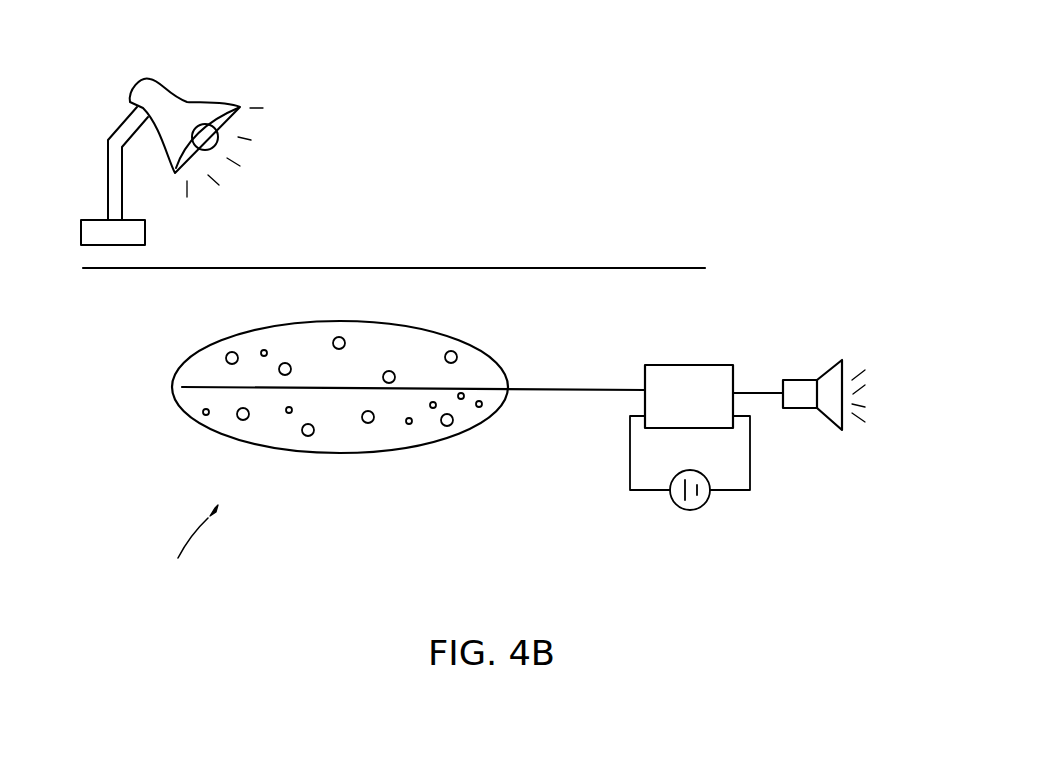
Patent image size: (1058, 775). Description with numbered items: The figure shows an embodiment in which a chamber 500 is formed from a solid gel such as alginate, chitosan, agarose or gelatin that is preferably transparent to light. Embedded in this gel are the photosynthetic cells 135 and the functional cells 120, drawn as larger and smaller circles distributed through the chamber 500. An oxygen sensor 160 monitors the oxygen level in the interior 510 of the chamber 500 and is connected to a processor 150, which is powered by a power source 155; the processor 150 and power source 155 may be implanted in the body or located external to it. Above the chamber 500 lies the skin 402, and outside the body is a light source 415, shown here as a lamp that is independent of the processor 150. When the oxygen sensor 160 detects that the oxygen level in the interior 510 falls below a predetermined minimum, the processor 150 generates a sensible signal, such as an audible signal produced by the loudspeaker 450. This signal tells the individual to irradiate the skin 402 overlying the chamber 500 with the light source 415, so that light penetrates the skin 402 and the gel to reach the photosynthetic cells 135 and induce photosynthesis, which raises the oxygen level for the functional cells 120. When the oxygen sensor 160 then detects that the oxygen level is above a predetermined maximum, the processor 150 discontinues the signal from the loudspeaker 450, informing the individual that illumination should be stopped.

The light source 415 is at (172, 82).
The skin 402 is at (615, 268).
The interior 510 is at (332, 433).
The oxygen sensor 160 is at (210, 389).
The functional cells 120 is at (368, 423).
The photosynthetic cells 135 is at (479, 407).
The processor 150 is at (692, 364).
The power source 155 is at (688, 510).
The loudspeaker 450 is at (827, 422).
The chamber 500 is at (148, 577).